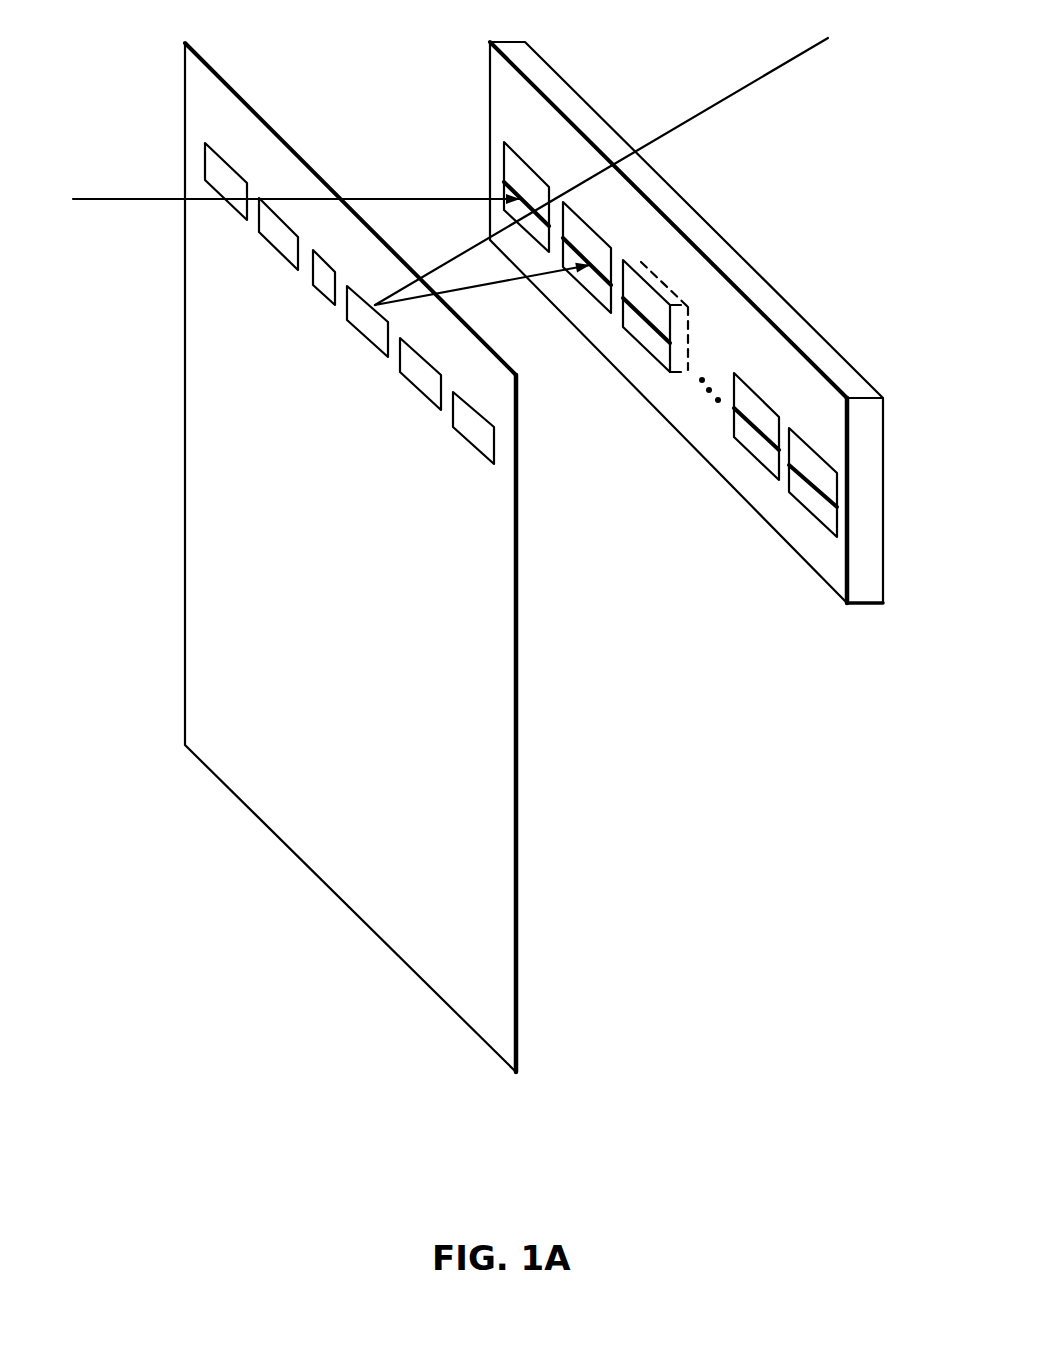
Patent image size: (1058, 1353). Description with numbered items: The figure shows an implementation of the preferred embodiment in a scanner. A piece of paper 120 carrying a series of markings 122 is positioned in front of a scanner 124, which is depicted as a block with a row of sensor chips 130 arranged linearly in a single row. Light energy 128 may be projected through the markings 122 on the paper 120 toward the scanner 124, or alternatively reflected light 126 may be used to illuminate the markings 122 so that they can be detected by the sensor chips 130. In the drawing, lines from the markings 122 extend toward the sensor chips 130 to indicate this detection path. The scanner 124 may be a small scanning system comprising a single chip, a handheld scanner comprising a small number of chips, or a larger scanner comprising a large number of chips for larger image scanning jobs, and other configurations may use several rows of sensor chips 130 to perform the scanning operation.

The piece of paper 120 is at (519, 907).
The markings 122 is at (222, 168).
The scanner 124 is at (800, 335).
The reflected light 126 is at (720, 100).
The light energy 128 is at (113, 199).
The sensor chips 130 is at (595, 222).